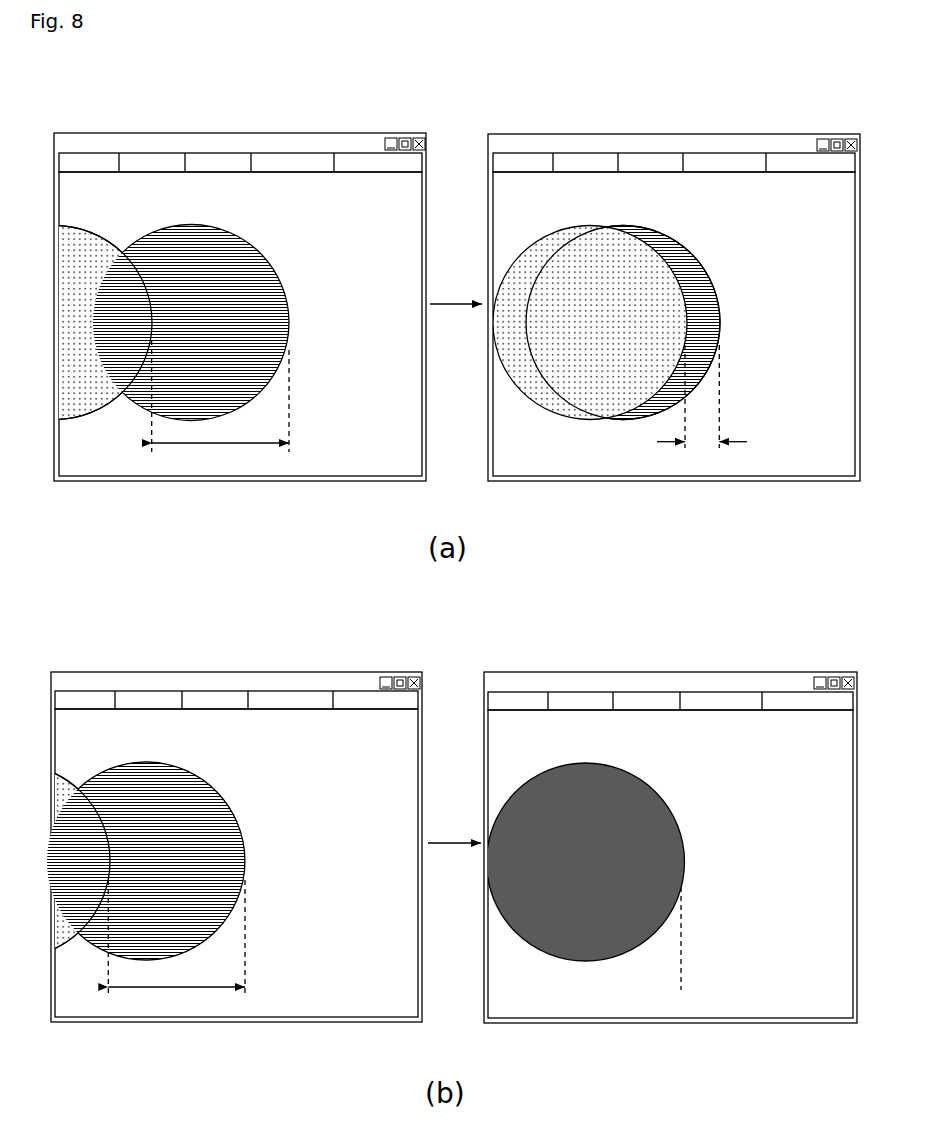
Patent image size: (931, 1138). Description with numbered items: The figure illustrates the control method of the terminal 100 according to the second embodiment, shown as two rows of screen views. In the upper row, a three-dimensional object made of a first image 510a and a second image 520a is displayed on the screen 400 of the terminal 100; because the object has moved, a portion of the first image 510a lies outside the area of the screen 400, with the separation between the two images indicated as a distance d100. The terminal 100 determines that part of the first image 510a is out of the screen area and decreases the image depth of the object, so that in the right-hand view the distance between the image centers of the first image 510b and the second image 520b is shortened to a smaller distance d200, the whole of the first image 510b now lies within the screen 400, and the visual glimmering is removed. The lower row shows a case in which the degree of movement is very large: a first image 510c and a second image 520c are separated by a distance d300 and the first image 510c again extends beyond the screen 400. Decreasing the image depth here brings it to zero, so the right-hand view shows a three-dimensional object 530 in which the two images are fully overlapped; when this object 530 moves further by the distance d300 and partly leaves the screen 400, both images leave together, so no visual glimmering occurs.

The terminal 100 is at (287, 133).
The screen 400 is at (350, 212).
The first image 510a is at (83, 245).
The second image 520a is at (208, 245).
The first image 510b is at (538, 248).
The second image 520b is at (671, 242).
The first image 510c is at (71, 797).
The second image 520c is at (152, 797).
The 3D object 530 is at (587, 777).
The distance d100 is at (220, 403).
The distance d200 is at (702, 407).
The distance d300 is at (405, 946).